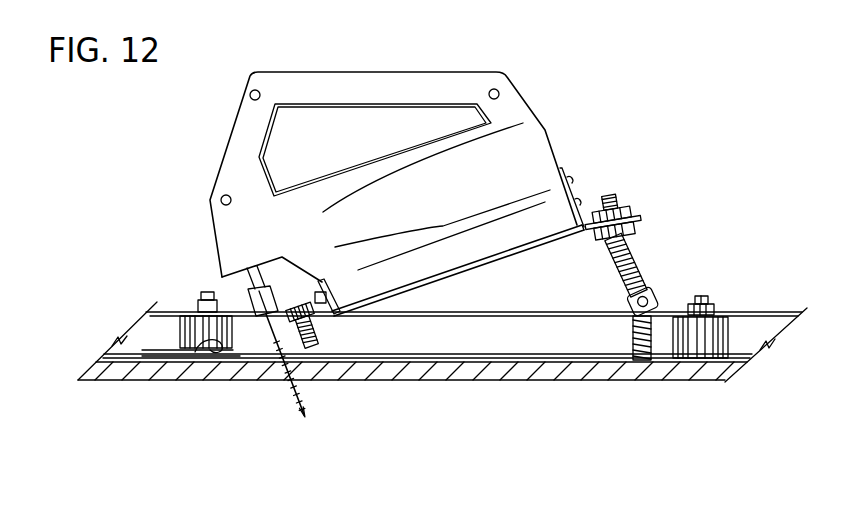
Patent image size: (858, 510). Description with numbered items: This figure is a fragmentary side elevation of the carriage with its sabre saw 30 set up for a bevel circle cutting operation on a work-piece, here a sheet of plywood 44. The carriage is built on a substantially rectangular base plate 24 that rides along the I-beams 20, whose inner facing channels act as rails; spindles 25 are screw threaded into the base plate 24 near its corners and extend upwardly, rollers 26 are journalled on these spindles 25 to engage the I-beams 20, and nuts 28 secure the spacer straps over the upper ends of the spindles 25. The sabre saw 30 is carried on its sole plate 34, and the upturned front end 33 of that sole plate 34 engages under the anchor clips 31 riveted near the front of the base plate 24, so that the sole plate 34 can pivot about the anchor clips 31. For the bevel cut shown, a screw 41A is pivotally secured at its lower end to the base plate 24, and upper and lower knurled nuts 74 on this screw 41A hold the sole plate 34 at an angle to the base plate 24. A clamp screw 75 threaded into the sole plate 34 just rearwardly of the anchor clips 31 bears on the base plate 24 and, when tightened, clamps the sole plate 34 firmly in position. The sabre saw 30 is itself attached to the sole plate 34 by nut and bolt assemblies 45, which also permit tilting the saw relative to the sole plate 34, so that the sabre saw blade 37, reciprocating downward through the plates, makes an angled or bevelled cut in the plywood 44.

The I-beam 20 is at (160, 330).
The base plate 24 is at (476, 360).
The spindle 25 is at (705, 297).
The roller 26 is at (722, 337).
The nut 28 is at (715, 306).
The sabre saw 30 is at (527, 150).
The anchor clip 31 is at (200, 337).
The upturned front end 33 is at (231, 353).
The sole plate 34 is at (500, 258).
The sabre saw blade 37 is at (302, 395).
The screw 41A is at (633, 262).
The sheet of plywood 44 is at (605, 372).
The nut and bolt assembly 45 is at (316, 297).
The knurled nut 74 is at (630, 228).
The clamp screw 75 is at (320, 340).